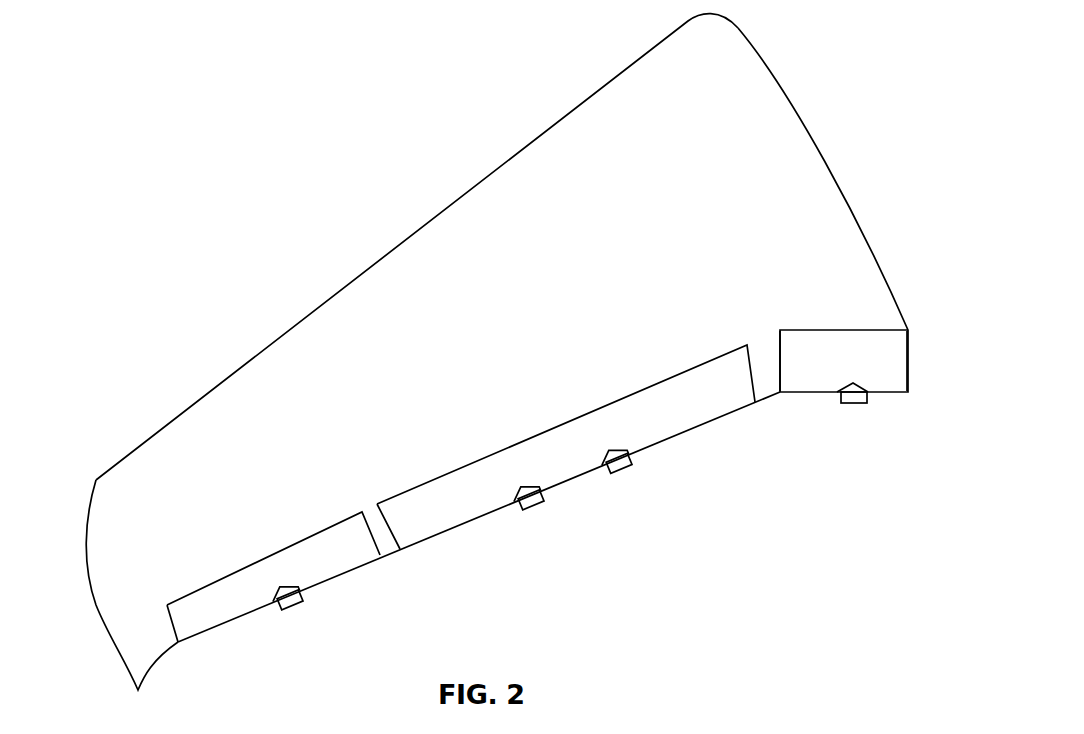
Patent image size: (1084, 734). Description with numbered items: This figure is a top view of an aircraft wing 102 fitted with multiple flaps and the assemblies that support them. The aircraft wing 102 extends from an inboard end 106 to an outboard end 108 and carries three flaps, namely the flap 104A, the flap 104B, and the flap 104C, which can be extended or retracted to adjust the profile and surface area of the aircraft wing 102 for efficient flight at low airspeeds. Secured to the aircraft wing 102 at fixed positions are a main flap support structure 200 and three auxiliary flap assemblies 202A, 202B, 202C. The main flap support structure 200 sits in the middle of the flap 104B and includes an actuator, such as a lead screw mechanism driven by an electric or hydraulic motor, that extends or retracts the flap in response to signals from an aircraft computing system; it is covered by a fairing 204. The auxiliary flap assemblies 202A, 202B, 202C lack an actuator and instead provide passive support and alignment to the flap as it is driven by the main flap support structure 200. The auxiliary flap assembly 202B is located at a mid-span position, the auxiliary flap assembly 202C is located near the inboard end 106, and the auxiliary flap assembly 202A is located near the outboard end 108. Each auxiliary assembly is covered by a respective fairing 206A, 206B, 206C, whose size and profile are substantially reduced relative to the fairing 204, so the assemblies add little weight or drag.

The aircraft wing 102 is at (451, 138).
The flap 104A is at (343, 552).
The flap 104B is at (440, 527).
The flap 104C is at (892, 368).
The inboard end 106 is at (858, 266).
The outboard end 108 is at (120, 581).
The main flap support structure 200 is at (536, 501).
The auxiliary flap assembly 202A is at (290, 606).
The auxiliary flap assembly 202B is at (623, 466).
The auxiliary flap assembly 202C is at (852, 397).
The fairing 204 is at (513, 498).
The fairing 206A is at (273, 602).
The fairing 206B is at (602, 466).
The fairing 206C is at (838, 392).